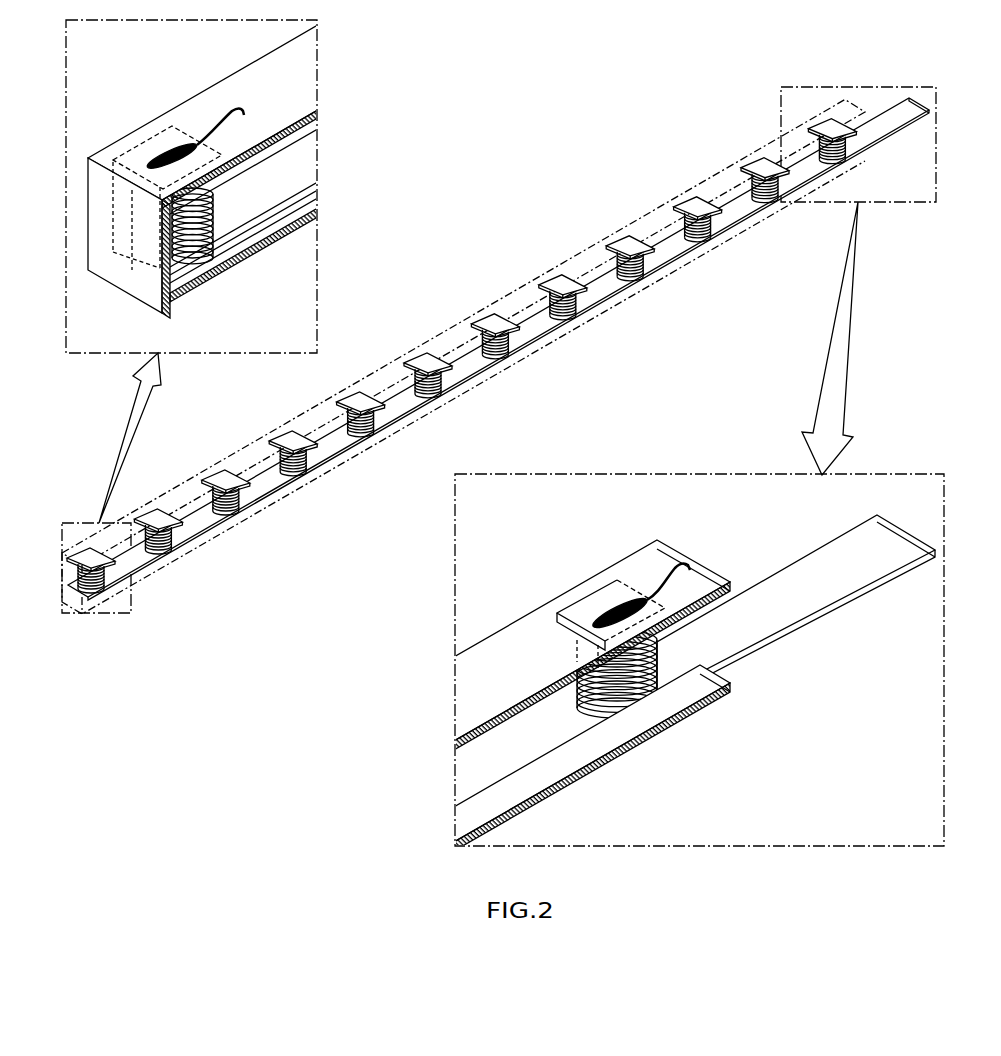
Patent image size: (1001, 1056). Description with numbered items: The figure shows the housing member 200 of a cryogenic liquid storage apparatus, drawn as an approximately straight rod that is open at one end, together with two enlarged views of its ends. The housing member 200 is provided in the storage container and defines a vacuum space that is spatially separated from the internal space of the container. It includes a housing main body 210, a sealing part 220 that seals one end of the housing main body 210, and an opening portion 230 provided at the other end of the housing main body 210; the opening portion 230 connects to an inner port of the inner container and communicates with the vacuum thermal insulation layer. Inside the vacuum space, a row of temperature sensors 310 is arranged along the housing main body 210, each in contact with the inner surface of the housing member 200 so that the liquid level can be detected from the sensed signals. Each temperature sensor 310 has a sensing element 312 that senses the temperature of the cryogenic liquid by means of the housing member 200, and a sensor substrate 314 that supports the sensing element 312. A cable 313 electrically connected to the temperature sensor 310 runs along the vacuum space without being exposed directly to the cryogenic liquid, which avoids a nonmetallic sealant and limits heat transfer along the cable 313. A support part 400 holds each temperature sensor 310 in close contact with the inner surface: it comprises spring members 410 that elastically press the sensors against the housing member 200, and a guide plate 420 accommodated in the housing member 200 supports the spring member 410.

The housing member 200 is at (546, 355).
The housing main body 210 is at (513, 293).
The sealing part 220 is at (103, 207).
The opening portion 230 is at (727, 678).
The temperature sensor 310 is at (230, 154).
The sensing element 312 is at (172, 148).
The cable 313 is at (218, 117).
The sensor substrate 314 is at (568, 607).
The support part 400 is at (214, 241).
The spring member 410 is at (650, 697).
The guide plate 420 is at (812, 605).